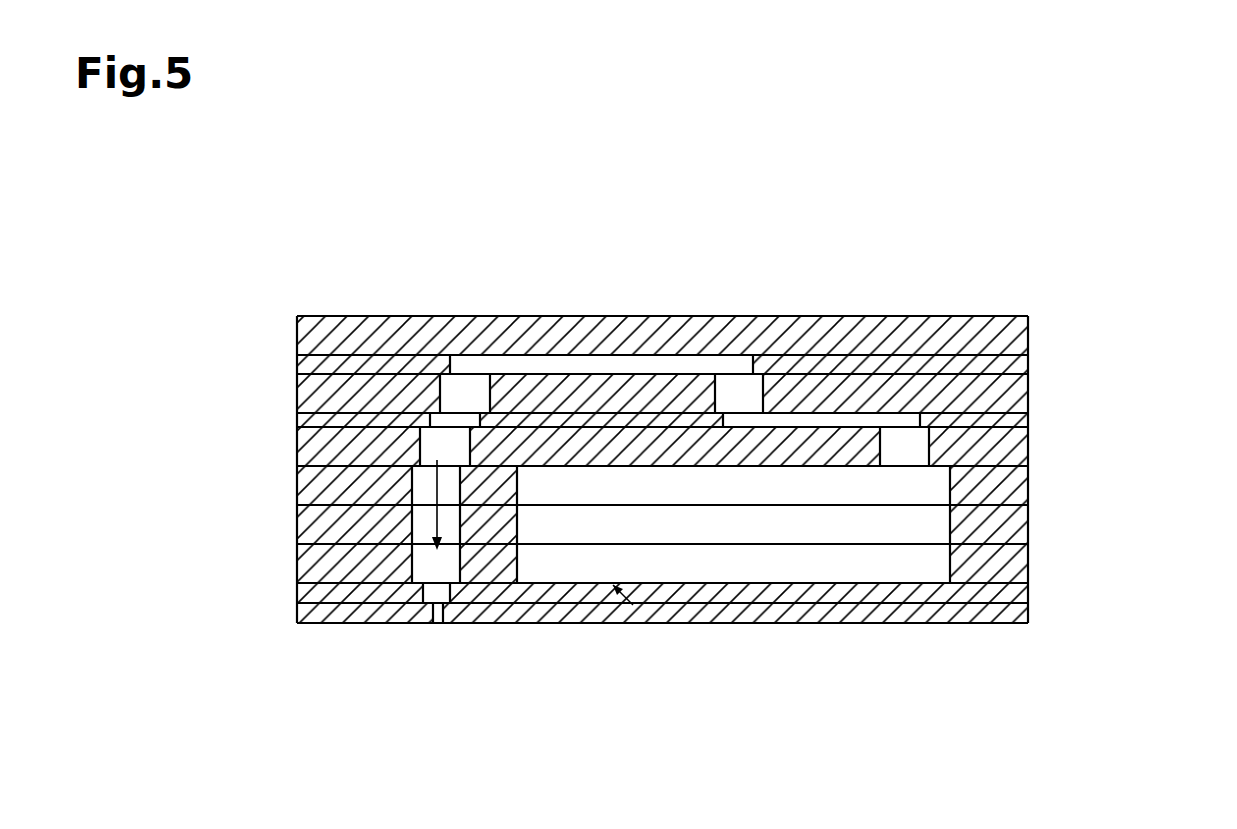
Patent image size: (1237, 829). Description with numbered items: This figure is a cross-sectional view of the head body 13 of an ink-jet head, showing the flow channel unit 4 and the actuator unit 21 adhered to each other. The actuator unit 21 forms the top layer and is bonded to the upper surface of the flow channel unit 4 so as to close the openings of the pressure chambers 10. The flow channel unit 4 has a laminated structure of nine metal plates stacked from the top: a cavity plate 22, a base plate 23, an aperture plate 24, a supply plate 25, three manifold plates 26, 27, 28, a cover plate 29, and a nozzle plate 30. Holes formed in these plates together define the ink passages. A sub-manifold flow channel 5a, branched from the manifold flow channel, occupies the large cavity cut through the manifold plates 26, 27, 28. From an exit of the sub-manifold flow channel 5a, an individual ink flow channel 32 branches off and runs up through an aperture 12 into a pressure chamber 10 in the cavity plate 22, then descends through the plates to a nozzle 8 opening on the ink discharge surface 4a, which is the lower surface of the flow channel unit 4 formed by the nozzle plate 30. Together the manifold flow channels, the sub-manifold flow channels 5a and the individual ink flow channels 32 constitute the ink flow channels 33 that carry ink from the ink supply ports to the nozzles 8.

The flow channel unit 4 is at (1116, 357).
The ink discharge surface 4a is at (733, 623).
The sub-manifold flow channel 5a is at (952, 523).
The nozzle 8 is at (447, 623).
The pressure chamber 10 is at (571, 355).
The aperture 12 is at (836, 420).
The head body 13 is at (1153, 270).
The actuator unit 21 is at (1023, 332).
The cavity plate 22 is at (1027, 365).
The base plate 23 is at (1027, 390).
The aperture plate 24 is at (1027, 418).
The supply plate 25 is at (1025, 453).
The manifold plate 26 is at (1025, 488).
The manifold plate 27 is at (1027, 522).
The manifold plate 28 is at (1027, 563).
The cover plate 29 is at (1027, 593).
The nozzle plate 30 is at (1027, 615).
The individual ink flow channel 32 is at (433, 515).
The ink flow channel 33 is at (633, 605).